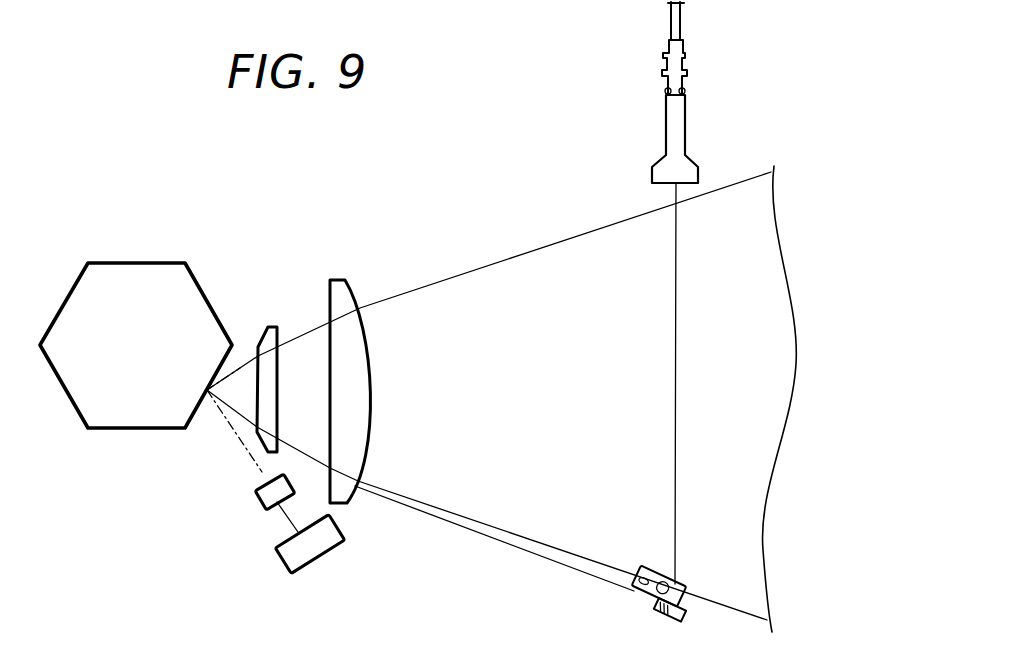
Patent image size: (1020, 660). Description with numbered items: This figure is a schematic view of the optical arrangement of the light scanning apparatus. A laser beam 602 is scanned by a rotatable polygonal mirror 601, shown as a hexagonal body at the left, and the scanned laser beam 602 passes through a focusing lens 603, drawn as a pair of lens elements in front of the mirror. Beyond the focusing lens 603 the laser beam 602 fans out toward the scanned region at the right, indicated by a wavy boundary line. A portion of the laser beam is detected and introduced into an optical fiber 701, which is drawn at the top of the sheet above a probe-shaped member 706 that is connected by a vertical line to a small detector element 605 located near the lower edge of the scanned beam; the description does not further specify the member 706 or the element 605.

The rotatable polygonal mirror 601 is at (145, 263).
The laser beam 602 is at (423, 287).
The focusing lens 603 is at (273, 327).
The photodetector 605 is at (637, 604).
The optical fiber 701 is at (685, 20).
The light receiving probe 706 is at (690, 97).